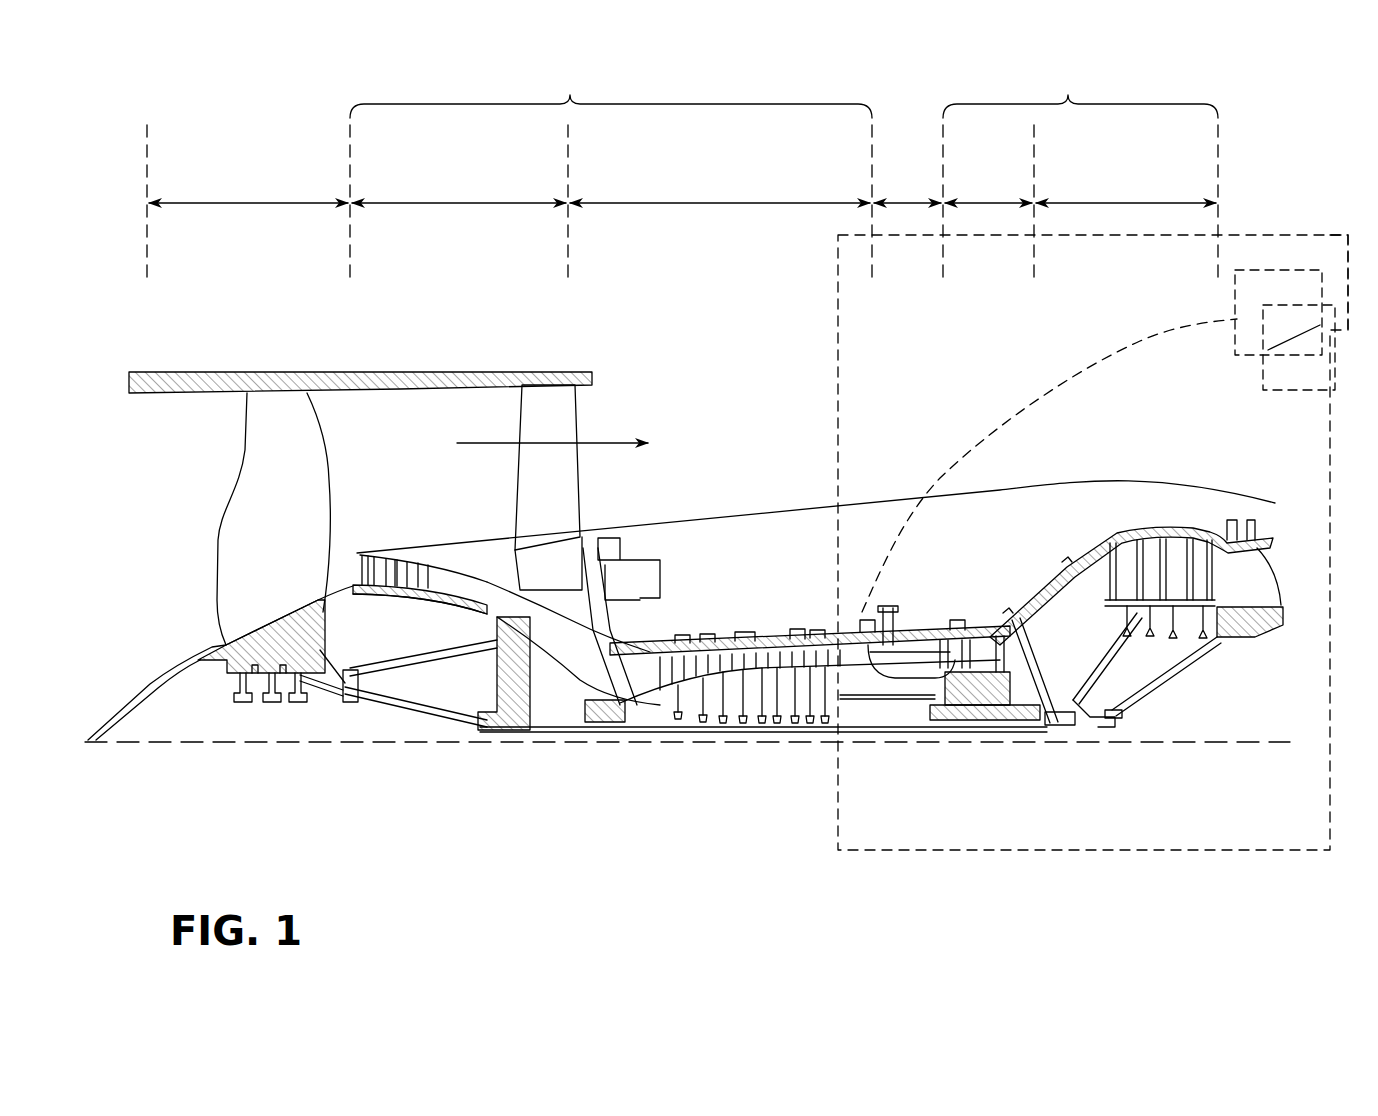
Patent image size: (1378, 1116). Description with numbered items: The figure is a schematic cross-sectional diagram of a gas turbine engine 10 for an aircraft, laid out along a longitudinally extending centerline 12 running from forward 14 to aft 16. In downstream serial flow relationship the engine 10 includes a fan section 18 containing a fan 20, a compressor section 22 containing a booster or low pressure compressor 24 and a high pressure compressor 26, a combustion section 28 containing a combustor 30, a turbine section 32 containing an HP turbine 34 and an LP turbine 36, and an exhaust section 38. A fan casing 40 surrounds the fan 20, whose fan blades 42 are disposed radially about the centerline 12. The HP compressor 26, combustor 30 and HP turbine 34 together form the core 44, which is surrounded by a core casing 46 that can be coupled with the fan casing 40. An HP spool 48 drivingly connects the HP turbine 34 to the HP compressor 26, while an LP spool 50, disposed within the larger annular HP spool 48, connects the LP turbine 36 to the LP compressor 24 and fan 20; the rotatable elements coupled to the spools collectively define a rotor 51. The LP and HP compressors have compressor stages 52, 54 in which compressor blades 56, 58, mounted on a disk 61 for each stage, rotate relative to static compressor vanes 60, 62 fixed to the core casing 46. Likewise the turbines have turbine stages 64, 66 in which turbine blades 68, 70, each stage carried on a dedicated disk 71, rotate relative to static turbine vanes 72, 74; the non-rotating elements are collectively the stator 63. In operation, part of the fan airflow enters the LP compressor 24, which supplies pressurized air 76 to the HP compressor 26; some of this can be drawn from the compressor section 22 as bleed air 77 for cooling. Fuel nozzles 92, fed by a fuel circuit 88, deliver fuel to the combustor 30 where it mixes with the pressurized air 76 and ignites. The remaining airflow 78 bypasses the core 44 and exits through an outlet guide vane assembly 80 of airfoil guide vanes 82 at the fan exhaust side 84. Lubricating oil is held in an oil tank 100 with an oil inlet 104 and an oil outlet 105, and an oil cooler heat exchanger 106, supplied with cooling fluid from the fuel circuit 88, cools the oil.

The gas turbine engine 10 is at (897, 365).
The centerline 12 is at (245, 745).
The forward 14 is at (95, 506).
The aft 16 is at (1293, 588).
The fan section 18 is at (248, 190).
The fan 20 is at (187, 583).
The compressor section 22 is at (611, 93).
The low pressure compressor 24 is at (459, 190).
The high pressure compressor 26 is at (720, 190).
The combustion section 28 is at (907, 186).
The combustor 30 is at (908, 650).
The turbine section 32 is at (1080, 93).
The HP turbine 34 is at (988, 190).
The LP turbine 36 is at (1126, 190).
The exhaust section 38 is at (1286, 545).
The fan casing 40 is at (375, 370).
The fan blades 42 is at (305, 452).
The core 44 is at (879, 508).
The core casing 46 is at (1113, 530).
The HP spool 48 is at (884, 720).
The LP spool 50 is at (497, 745).
The rotor 51 is at (699, 742).
The compressor stages 52 is at (345, 490).
The compressor stages 54 is at (725, 538).
The compressor blades 56 is at (395, 565).
The compressor blades 58 is at (628, 655).
The static compressor vanes 60 is at (366, 560).
The disk 61 is at (378, 596).
The static compressor vanes 62 is at (640, 640).
The stator 63 is at (625, 700).
The turbine stages 64 is at (1010, 575).
The turbine stages 66 is at (1200, 423).
The turbine blades 68 is at (958, 648).
The turbine blades 70 is at (1215, 530).
The disk 71 is at (965, 695).
The static turbine vanes 72 is at (938, 640).
The static turbine vanes 74 is at (1185, 530).
The pressurized air 76 is at (576, 656).
The bleed air 77 is at (746, 622).
The airflow 78 is at (457, 440).
The outlet guide vane assembly 80 is at (593, 496).
The airfoil guide vanes 82 is at (530, 480).
The fan exhaust side 84 is at (617, 402).
The fuel circuit 88 is at (1106, 340).
The fuel nozzles 92 is at (1290, 262).
The oil tank 100 is at (1256, 374).
The oil inlet 104 is at (1190, 878).
The oil outlet 105 is at (1338, 232).
The oil cooler heat exchanger 106 is at (1298, 326).